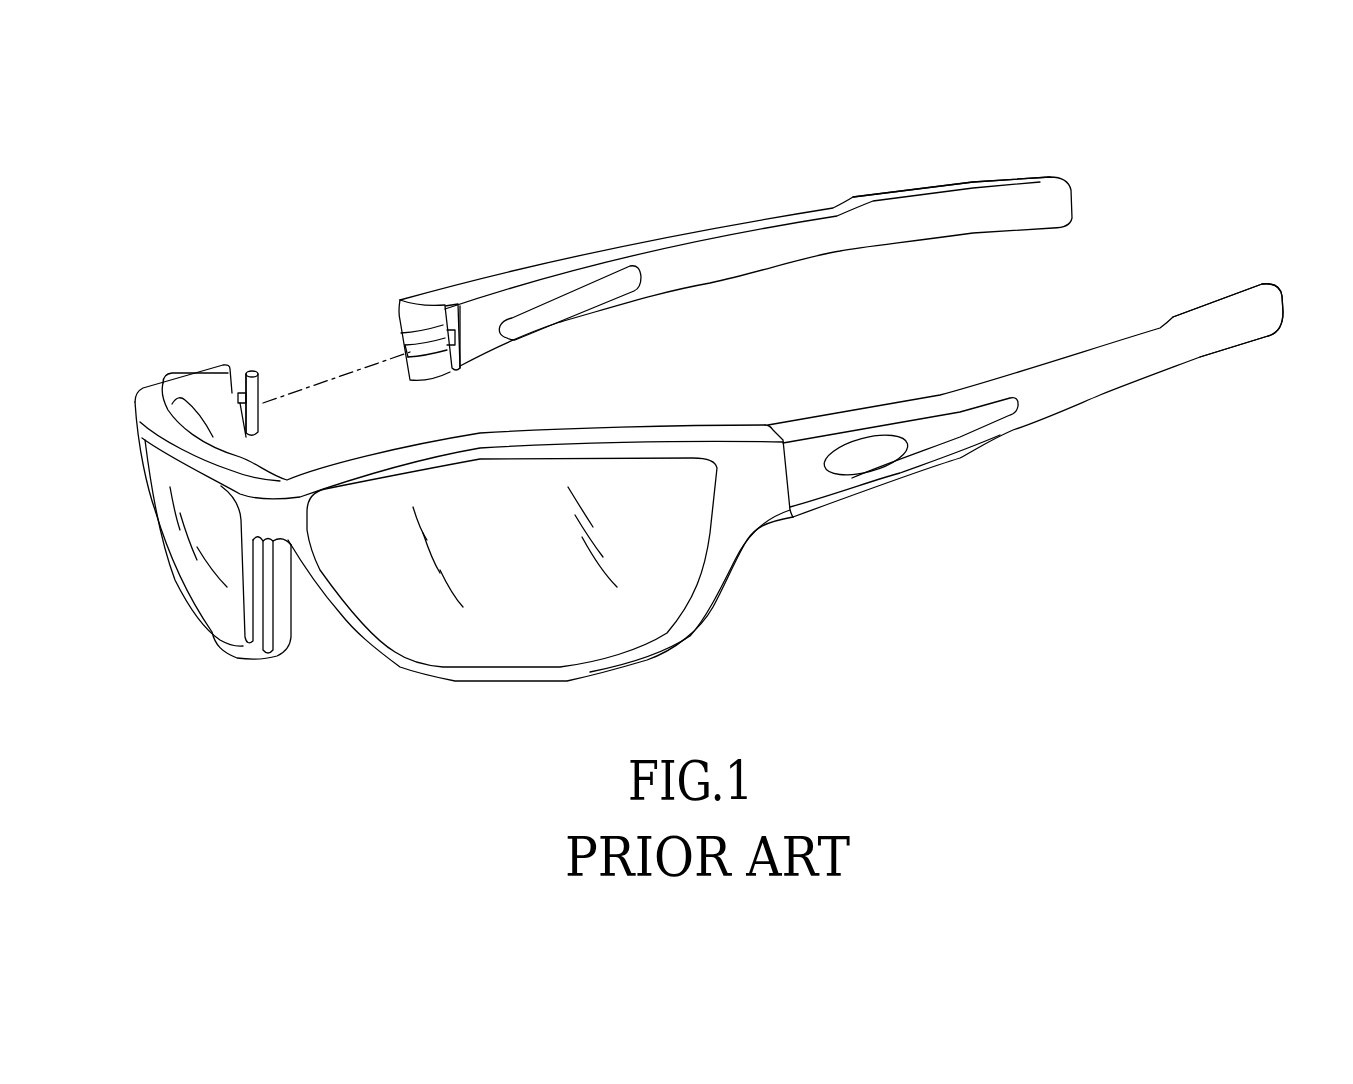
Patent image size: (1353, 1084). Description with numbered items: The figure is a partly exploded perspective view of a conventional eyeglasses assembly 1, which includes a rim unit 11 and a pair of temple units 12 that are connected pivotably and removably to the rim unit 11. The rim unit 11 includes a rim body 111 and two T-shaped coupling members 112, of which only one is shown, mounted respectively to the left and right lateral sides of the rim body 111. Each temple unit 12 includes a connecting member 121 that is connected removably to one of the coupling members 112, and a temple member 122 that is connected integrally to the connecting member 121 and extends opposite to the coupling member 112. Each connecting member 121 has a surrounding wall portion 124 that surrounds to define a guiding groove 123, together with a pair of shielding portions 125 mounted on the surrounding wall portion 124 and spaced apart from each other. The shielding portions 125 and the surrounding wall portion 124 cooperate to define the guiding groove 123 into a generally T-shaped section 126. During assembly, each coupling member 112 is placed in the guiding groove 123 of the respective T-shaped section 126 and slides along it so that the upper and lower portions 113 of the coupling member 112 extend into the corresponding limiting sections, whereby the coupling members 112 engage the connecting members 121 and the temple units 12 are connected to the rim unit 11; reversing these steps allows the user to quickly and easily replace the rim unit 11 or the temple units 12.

The eyeglasses assembly 1 is at (318, 742).
The rim unit 11 is at (258, 690).
The rim body 111 is at (715, 635).
The coupling member 112 is at (235, 345).
The upper and lower portions of the coupling member 113 is at (249, 368).
The temple unit 12 is at (792, 183).
The connecting member 121 is at (429, 280).
The temple member 122 is at (963, 200).
The guiding groove 123 is at (438, 363).
The surrounding wall portion 124 is at (447, 303).
The shielding portions 125 is at (407, 323).
The T-shaped section 126 is at (460, 342).